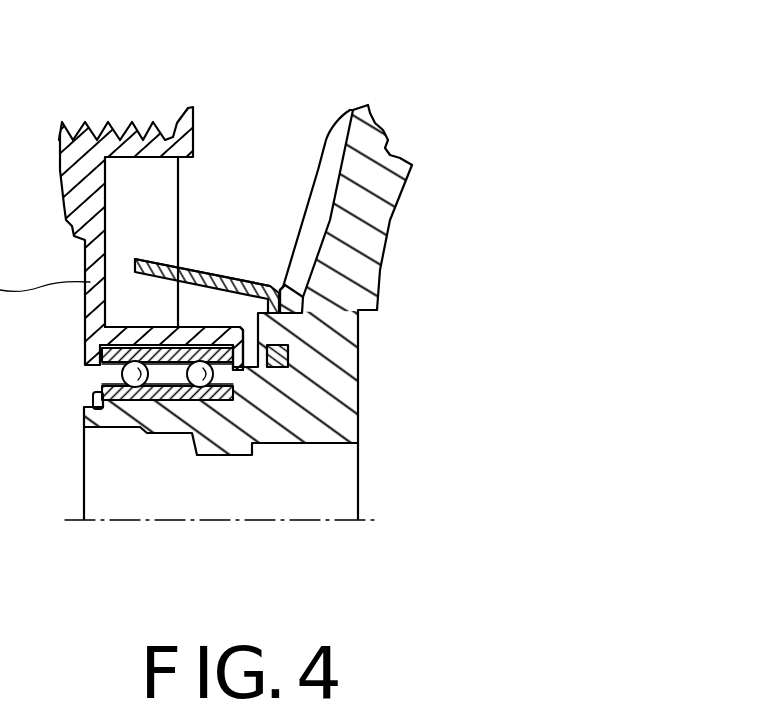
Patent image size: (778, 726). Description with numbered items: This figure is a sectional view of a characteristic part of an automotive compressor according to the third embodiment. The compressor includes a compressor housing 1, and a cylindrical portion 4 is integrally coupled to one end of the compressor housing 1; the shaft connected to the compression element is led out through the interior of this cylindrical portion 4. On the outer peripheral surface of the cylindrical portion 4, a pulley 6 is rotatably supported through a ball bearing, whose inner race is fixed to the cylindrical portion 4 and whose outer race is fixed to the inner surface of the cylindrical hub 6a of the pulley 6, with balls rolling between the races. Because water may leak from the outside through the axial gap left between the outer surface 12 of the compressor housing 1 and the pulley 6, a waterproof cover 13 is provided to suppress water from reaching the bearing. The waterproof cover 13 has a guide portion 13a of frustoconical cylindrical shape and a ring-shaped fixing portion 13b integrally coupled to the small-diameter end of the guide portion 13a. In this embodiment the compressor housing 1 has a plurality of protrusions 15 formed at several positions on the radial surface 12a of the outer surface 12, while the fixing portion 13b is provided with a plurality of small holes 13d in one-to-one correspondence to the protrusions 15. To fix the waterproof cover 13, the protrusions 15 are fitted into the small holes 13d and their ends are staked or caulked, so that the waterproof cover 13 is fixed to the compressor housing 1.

The compressor housing 1 is at (350, 110).
The cylindrical portion 4 is at (238, 440).
The pulley 6 is at (195, 122).
The cylindrical hub 6a is at (160, 328).
The outer surface 12 is at (283, 278).
The radial surface 12a is at (292, 290).
The waterproof cover 13 is at (217, 255).
The guide portion 13a is at (163, 260).
The fixing portion 13b is at (360, 338).
The small holes 13d is at (290, 347).
The protrusions 15 is at (268, 318).